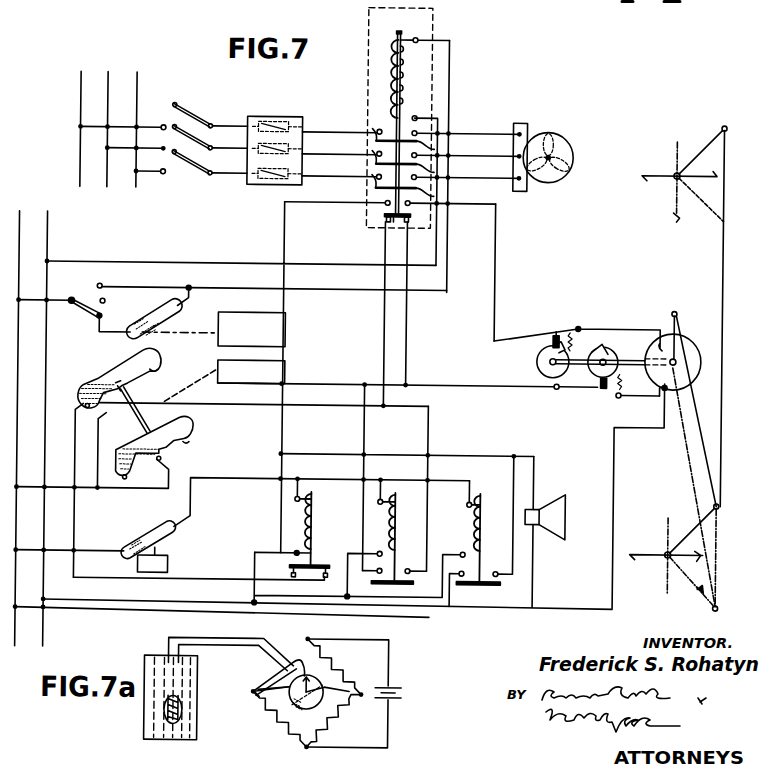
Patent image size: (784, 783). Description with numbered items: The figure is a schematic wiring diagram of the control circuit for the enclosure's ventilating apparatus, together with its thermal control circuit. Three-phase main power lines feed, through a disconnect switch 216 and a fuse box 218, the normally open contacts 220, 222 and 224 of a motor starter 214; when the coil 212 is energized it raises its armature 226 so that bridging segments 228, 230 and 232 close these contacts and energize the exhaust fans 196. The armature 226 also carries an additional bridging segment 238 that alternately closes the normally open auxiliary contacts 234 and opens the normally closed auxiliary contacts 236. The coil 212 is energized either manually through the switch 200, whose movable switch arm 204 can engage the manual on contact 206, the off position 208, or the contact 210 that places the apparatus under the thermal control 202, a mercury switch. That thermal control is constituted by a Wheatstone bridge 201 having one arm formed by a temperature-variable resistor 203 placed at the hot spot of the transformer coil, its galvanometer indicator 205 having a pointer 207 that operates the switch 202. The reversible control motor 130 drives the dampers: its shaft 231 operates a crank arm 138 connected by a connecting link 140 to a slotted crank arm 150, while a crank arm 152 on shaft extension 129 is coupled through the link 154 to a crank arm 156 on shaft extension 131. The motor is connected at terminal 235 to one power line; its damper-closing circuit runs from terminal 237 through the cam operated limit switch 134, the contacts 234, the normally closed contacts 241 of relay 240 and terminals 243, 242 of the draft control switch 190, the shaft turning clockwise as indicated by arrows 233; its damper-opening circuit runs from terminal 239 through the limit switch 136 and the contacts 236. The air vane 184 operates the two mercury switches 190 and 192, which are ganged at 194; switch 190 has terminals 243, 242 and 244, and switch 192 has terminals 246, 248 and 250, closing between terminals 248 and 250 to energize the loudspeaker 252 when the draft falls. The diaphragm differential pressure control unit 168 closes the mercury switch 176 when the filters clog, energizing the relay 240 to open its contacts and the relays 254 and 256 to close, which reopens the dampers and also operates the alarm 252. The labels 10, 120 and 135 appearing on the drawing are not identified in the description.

In FIG. 7A, the insulating board 10 is at (146, 666).
In FIG. 7, the guide pulley support 120 is at (665, 174).
In FIG. 7, the shaft extension 129 is at (668, 550).
In FIG. 7, the control motor 130 is at (678, 340).
In FIG. 7, the shaft extension 131 is at (674, 170).
In FIG. 7, the limit switch 134 is at (552, 334).
In FIG. 7, the cam 135 is at (538, 368).
In FIG. 7, the limit switch 136 is at (599, 387).
In FIG. 7, the crank arm 138 is at (676, 310).
In FIG. 7, the connecting link 140 is at (709, 400).
In FIG. 7, the crank arm 150 is at (686, 510).
In FIG. 7, the crank arm 152 is at (720, 521).
In FIG. 7, the link 154 is at (722, 355).
In FIG. 7, the crank arm 156 is at (712, 127).
In FIG. 7, the diaphragm differential pressure control unit 168 is at (140, 570).
In FIG. 7, the mercury switch 176 is at (170, 542).
In FIG. 7, the vane 184 is at (220, 369).
In FIG. 7, the double throw mercury switch 190 is at (94, 383).
In FIG. 7, the double throw mercury switch 192 is at (180, 425).
In FIG. 7, the ganging 194 is at (132, 420).
In FIG. 7, the exhaust fans 196 is at (565, 137).
In FIG. 7, the manual switch 200 is at (86, 297).
In FIG. 7A, the Wheatstone bridge 201 is at (274, 722).
In FIG. 7, the thermal control 202 is at (176, 319).
In FIG. 7A, the thermal control 202 is at (339, 686).
In FIG. 7A, the resistor 203 is at (168, 713).
In FIG. 7, the movable switch arm 204 is at (78, 312).
In FIG. 7A, the galvanometer indicator 205 is at (294, 650).
In FIG. 7, the contact 206 is at (102, 288).
In FIG. 7A, the pointer 207 is at (262, 692).
In FIG. 7, the off position 208 is at (105, 303).
In FIG. 7, the contact 210 is at (104, 320).
In FIG. 7, the coil 212 is at (387, 72).
In FIG. 7, the motor starter 214 is at (432, 26).
In FIG. 7, the disconnect switch 216 is at (183, 169).
In FIG. 7, the fuse box 218 is at (252, 186).
In FIG. 7, the normally open contact 220 is at (375, 130).
In FIG. 7, the normally open contact 222 is at (375, 152).
In FIG. 7, the normally open contact 224 is at (375, 175).
In FIG. 7, the armature 226 is at (393, 36).
In FIG. 7, the bridging segment 228 is at (440, 141).
In FIG. 7, the bridging segment 230 is at (440, 163).
In FIG. 7, the motor shaft 231 is at (632, 352).
In FIG. 7, the bridging segment 232 is at (440, 185).
In FIG. 7, the arrows 233 is at (585, 318).
In FIG. 7, the normally open auxiliary contacts 234 is at (368, 204).
In FIG. 7, the motor terminal 235 is at (665, 392).
In FIG. 7, the normally closed auxiliary contacts 236 is at (381, 222).
In FIG. 7, the motor terminal 237 is at (666, 328).
In FIG. 7, the bridging segment 238 is at (380, 218).
In FIG. 7, the motor terminal 239 is at (659, 389).
In FIG. 7, the relay 240 is at (318, 520).
In FIG. 7, the normally closed contacts 241 is at (324, 565).
In FIG. 7, the terminal 242 is at (119, 388).
In FIG. 7, the terminal 243 is at (84, 408).
In FIG. 7, the terminal 244 is at (158, 370).
In FIG. 7, the terminal 246 is at (129, 481).
In FIG. 7, the terminal 248 is at (162, 462).
In FIG. 7, the terminal 250 is at (190, 443).
In FIG. 7, the loudspeaker 252 is at (560, 495).
In FIG. 7, the relay 254 is at (402, 518).
In FIG. 7, the relay coil 256 is at (474, 530).